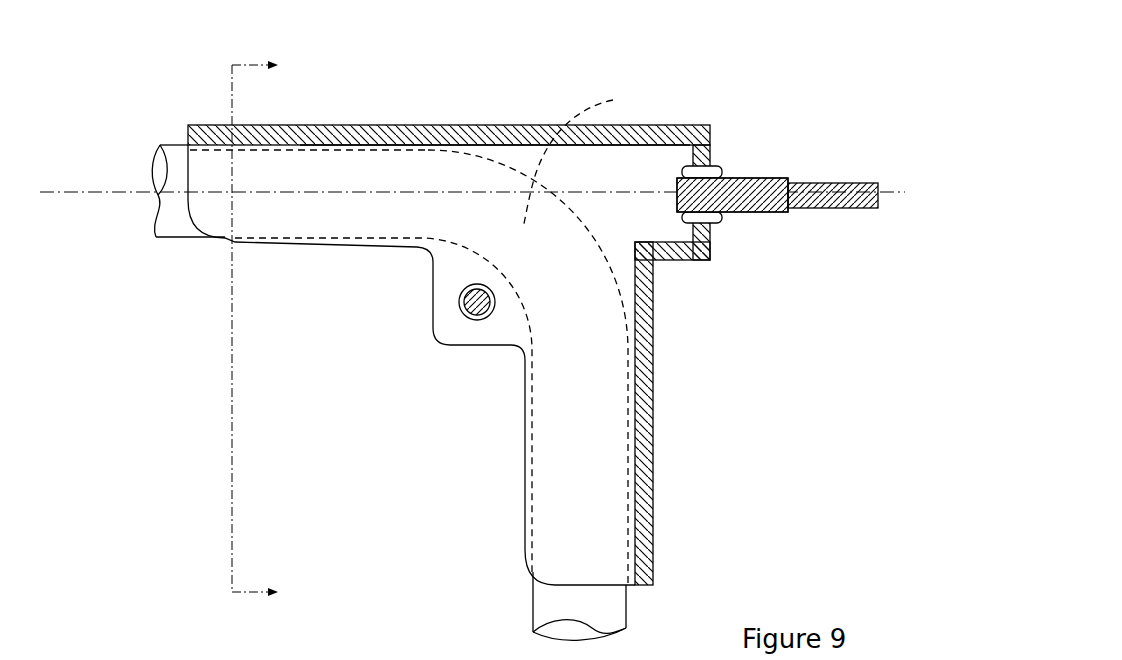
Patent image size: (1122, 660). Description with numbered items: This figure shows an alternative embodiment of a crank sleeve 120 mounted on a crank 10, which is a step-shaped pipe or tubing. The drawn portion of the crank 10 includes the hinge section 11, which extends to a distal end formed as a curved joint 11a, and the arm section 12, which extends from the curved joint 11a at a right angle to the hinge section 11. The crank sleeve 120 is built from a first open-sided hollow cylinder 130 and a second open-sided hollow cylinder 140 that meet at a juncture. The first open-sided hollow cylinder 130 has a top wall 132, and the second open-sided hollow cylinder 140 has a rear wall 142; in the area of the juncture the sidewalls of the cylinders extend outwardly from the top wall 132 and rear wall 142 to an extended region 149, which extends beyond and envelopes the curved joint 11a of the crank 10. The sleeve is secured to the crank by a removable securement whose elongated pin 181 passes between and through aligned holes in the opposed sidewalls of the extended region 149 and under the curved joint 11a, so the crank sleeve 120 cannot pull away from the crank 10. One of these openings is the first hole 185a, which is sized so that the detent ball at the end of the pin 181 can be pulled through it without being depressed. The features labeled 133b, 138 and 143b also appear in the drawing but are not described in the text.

The crank 10 is at (254, 331).
The hinge section 11 is at (178, 170).
The curved joint 11a is at (594, 157).
The arm section 12 is at (550, 603).
The crank sleeve 120 is at (777, 114).
The first open-sided hollow cylinder 130 is at (548, 87).
The top wall 132 is at (413, 127).
The inner wall surface 133b is at (522, 168).
The bolt 138 is at (712, 152).
The second open-sided hollow cylinder 140 is at (705, 507).
The rear wall 142 is at (653, 437).
The inner passage surface 143b is at (618, 277).
The extended region 149 is at (450, 278).
The elongated pin 181 is at (465, 318).
The first hole 185a is at (487, 318).